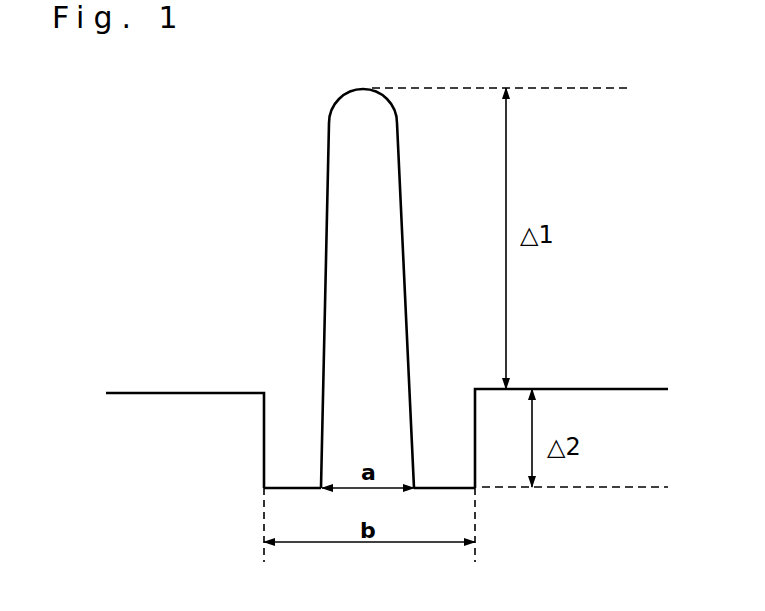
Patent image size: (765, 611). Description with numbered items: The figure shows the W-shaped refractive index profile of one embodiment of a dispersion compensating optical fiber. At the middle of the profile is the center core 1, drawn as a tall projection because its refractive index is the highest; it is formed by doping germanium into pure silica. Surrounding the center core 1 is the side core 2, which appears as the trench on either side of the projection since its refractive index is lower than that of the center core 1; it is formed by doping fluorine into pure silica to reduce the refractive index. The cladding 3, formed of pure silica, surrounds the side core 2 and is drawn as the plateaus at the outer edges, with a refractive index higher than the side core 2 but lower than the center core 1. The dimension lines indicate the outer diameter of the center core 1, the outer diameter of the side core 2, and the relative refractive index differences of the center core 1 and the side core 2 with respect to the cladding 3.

The center core 1 is at (381, 152).
The side core 2 is at (287, 487).
The cladding 3 is at (187, 392).